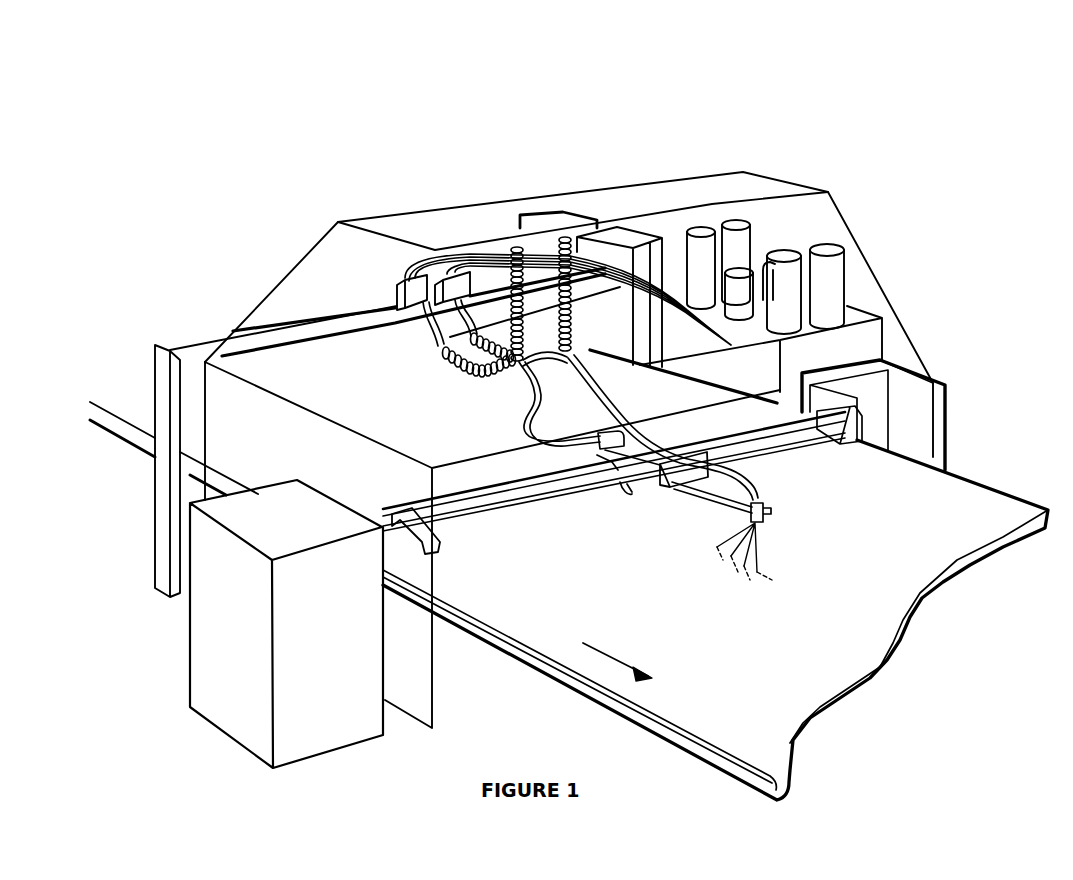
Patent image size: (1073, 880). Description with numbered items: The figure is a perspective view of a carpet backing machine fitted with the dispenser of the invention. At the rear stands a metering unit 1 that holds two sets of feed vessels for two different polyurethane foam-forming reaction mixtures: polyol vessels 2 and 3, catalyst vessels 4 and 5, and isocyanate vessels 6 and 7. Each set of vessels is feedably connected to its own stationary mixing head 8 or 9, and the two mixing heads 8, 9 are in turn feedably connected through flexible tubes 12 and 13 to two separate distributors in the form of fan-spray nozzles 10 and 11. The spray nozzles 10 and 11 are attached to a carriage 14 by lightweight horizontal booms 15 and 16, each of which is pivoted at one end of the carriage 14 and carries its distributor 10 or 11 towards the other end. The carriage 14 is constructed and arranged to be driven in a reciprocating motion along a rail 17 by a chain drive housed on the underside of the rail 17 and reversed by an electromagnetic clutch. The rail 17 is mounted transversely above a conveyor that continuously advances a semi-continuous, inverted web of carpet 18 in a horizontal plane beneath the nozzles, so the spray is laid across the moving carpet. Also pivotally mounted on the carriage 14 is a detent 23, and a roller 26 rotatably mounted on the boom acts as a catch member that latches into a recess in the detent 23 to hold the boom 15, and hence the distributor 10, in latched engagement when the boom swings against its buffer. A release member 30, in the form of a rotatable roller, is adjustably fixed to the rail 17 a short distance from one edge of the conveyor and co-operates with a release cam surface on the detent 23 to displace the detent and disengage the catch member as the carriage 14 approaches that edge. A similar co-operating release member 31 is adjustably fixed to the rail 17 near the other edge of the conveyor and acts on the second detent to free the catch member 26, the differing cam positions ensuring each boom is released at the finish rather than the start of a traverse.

The metering unit 1 is at (863, 338).
The polyol vessel 2 is at (703, 228).
The polyol vessel 3 is at (736, 221).
The catalyst vessel 4 is at (741, 272).
The catalyst vessel 5 is at (768, 263).
The isocyanate vessel 6 is at (787, 253).
The isocyanate vessel 7 is at (830, 250).
The stationary mixing head 8 is at (452, 274).
The stationary mixing head 9 is at (412, 270).
The fan-spray nozzle 10 is at (770, 523).
The fan-spray nozzle 11 is at (595, 457).
The flexible tube 12 is at (434, 330).
The flexible tube 13 is at (444, 358).
The carriage 14 is at (665, 474).
The horizontal boom 15 is at (727, 502).
The horizontal boom 16 is at (556, 440).
The rail 17 is at (470, 520).
The web of carpet 18 is at (583, 645).
The detent 23 is at (740, 482).
The roller 26 is at (700, 488).
The release member 30 is at (445, 550).
The release member 31 is at (857, 442).